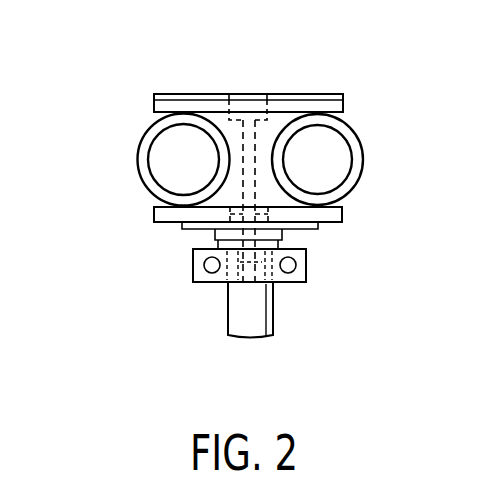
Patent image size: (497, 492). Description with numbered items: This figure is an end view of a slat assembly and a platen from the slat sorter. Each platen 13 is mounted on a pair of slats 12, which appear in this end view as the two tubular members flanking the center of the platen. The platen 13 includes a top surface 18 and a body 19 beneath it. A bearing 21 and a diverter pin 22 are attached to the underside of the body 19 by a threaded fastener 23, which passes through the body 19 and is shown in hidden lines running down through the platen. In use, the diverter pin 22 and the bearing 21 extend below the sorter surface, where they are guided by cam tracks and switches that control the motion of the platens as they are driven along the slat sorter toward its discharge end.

The slats 12 is at (150, 152).
The platen 13 is at (282, 88).
The top surface 18 is at (327, 97).
The body 19 is at (226, 192).
The bearing 21 is at (193, 274).
The diverter pin 22 is at (258, 332).
The threaded fastener 23 is at (245, 93).